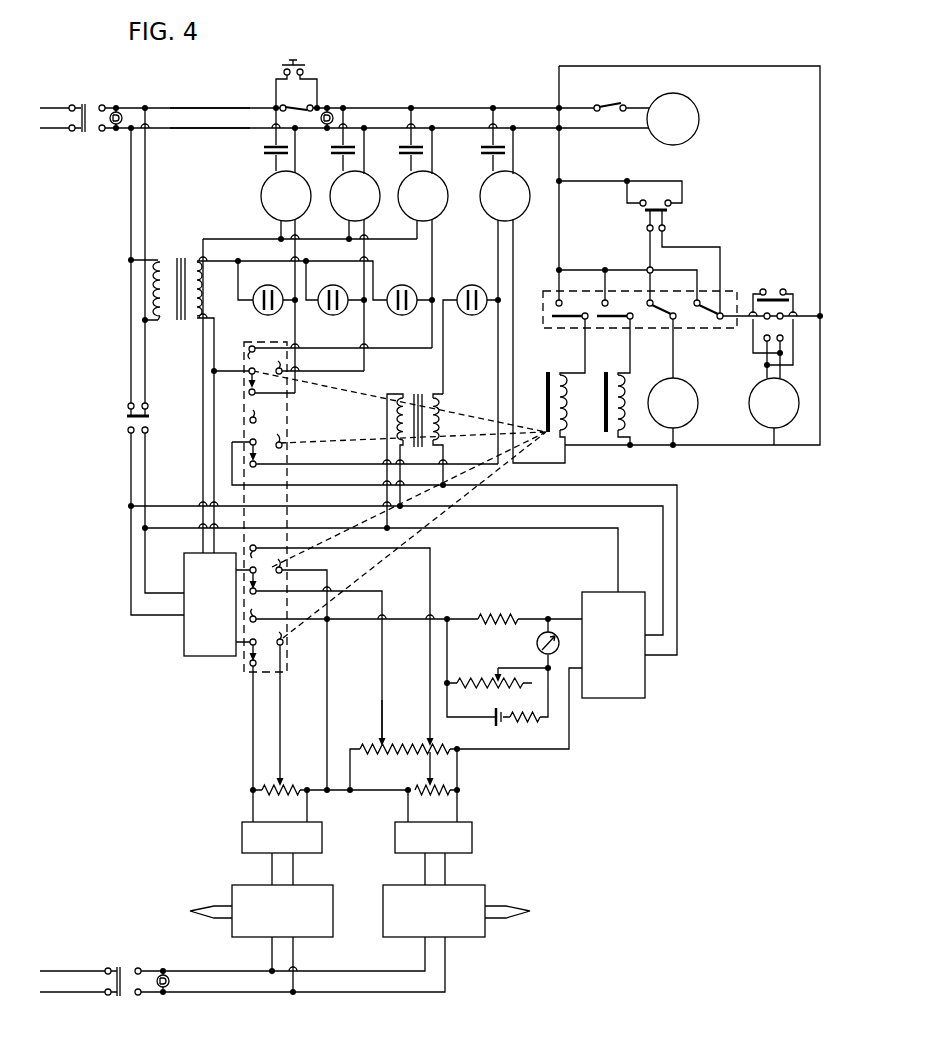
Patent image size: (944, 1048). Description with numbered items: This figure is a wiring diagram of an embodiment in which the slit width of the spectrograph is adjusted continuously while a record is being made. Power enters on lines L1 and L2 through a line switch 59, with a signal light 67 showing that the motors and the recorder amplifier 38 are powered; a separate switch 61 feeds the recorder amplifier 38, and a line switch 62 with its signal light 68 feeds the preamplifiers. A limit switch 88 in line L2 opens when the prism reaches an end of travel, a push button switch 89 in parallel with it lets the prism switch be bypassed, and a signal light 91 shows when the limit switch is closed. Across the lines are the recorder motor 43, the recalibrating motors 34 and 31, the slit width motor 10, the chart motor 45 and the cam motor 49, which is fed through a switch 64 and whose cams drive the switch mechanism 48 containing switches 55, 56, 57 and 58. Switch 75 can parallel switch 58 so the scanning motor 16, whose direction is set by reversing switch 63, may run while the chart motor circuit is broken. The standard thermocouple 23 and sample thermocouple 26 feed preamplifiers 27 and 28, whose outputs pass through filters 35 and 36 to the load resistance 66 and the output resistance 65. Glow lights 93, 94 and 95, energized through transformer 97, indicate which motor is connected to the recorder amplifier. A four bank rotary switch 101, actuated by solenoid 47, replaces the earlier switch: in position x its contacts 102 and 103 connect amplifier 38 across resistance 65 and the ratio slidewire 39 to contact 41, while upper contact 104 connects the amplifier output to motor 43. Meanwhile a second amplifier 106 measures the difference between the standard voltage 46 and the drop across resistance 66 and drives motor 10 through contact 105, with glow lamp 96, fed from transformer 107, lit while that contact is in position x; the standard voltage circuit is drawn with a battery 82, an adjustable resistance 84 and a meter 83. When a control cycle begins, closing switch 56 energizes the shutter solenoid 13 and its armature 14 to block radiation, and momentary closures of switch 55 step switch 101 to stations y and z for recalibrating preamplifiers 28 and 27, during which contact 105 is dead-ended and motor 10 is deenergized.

The line switch 59 is at (86, 105).
The signal light 67 is at (119, 112).
The line L² L2 is at (189, 107).
The line L¹ L1 is at (189, 129).
The limit switch 88 is at (283, 104).
The push button switch 89 is at (297, 62).
The signal light 91 is at (329, 110).
The switch 64 is at (610, 104).
The motor 49 is at (656, 130).
The reversible motor 43 is at (271, 208).
The recalibrating motor 34 is at (362, 208).
The calibrating motor 31 is at (440, 208).
The reversible motor 10 is at (520, 208).
The transformer 97 is at (178, 258).
The glow light 93 is at (266, 285).
The glow light 94 is at (334, 285).
The glow light 95 is at (402, 285).
The glow lamp 96 is at (468, 285).
The cam operated switch mechanism 48 is at (545, 290).
The switch 75 is at (666, 215).
The switch 55 is at (567, 322).
The switch 56 is at (615, 322).
The switch 57 is at (664, 322).
The switch 58 is at (709, 322).
The reversing switch 63 is at (767, 290).
The solenoid 47 is at (569, 397).
The solenoid 13 is at (624, 400).
The armature 14 is at (603, 414).
The motor 45 is at (690, 393).
The reversible motor 16 is at (753, 409).
The upper contact 104 is at (250, 382).
The four bank rotary switch 101 is at (290, 418).
The contact 105 is at (264, 449).
The transformer 107 is at (416, 390).
The switch 61 is at (128, 414).
The amplifier 38 is at (184, 636).
The contact 103 is at (262, 578).
The contact 102 is at (249, 663).
The source of standard voltage 46 is at (500, 618).
The meter 83 is at (537, 645).
The potentiometer 84 is at (489, 678).
The battery 82 is at (496, 721).
The second amplifier 106 is at (645, 684).
The slidewire 39 is at (428, 745).
The contact 41 is at (380, 745).
The output resistance 65 is at (285, 786).
The load resistance 66 is at (428, 781).
The filter 36 is at (322, 836).
The filter 35 is at (472, 836).
The preamplifier 28 is at (249, 885).
The preamplifier 27 is at (468, 885).
The sample thermocouple 26 is at (200, 906).
The standard thermocouple 23 is at (516, 906).
The line switch 62 is at (119, 968).
The signal light 68 is at (168, 992).